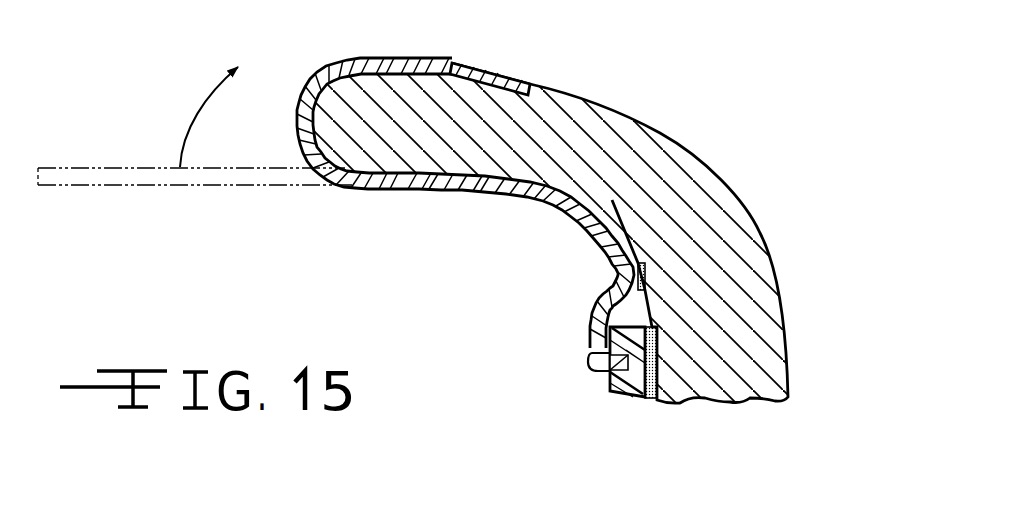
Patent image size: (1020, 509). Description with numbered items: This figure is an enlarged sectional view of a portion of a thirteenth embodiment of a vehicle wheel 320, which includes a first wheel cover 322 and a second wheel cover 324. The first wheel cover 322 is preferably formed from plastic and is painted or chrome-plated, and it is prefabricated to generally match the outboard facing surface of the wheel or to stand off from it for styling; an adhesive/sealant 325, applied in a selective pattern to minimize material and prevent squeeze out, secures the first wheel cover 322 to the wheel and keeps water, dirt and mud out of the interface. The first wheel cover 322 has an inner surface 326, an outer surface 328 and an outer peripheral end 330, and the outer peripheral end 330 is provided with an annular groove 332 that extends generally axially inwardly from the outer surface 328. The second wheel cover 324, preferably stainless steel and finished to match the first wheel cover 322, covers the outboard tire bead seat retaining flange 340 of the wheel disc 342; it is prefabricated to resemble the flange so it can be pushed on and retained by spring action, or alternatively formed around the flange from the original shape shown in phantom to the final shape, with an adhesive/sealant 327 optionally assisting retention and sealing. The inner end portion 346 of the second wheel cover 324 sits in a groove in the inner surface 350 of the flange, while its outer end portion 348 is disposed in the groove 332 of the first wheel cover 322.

The vehicle wheel 320 is at (432, 265).
The first wheel cover 322 is at (606, 394).
The second wheel cover 324 is at (355, 190).
The adhesive/sealant 325 is at (652, 400).
The inner surface 326 is at (657, 365).
The adhesive/sealant 327 is at (636, 318).
The outer surface 328 is at (605, 373).
The outer peripheral end 330 is at (634, 323).
The annular groove 332 is at (590, 362).
The outboard tire bead seat retaining flange 340 is at (667, 150).
The wheel disc 342 is at (767, 242).
The inner end portion 346 is at (458, 68).
The outer end portion 348 is at (503, 87).
The inner surface 350 is at (793, 357).